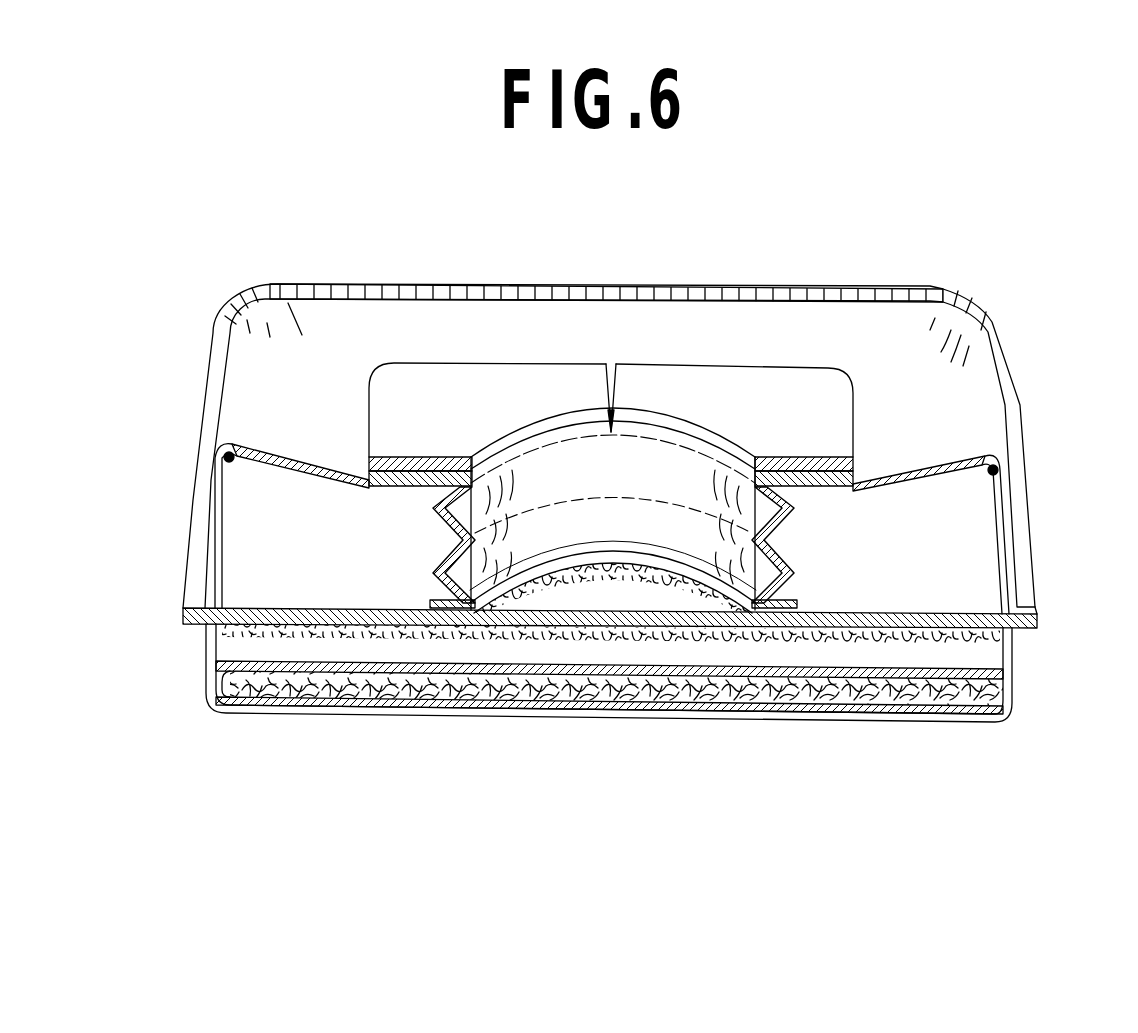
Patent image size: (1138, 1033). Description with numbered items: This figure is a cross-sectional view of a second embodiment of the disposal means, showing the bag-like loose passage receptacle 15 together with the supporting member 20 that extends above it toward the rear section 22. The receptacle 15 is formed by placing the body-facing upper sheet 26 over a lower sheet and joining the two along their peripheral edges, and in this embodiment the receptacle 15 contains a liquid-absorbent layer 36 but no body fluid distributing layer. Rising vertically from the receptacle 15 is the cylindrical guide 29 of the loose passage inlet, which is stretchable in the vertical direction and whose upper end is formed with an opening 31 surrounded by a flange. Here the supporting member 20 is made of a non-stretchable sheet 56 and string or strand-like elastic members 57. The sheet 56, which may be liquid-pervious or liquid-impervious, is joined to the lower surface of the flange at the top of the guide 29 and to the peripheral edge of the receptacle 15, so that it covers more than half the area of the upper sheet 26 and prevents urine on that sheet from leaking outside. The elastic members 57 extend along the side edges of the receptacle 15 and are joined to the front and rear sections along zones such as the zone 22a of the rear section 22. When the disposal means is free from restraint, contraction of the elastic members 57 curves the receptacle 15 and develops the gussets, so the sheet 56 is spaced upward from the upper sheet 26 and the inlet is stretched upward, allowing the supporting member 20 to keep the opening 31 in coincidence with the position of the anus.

The loose passage receptacle 15 is at (1020, 687).
The supporting member 20 is at (1006, 418).
The rear section 22 is at (742, 320).
The zone 22a is at (940, 292).
The upper sheet 26 is at (358, 589).
The cylindrical guide 29 is at (783, 547).
The opening 31 is at (533, 427).
The liquid-absorbent layer 36 is at (748, 706).
The non-stretchable sheet 56 is at (978, 370).
The elastic members 57 is at (229, 463).